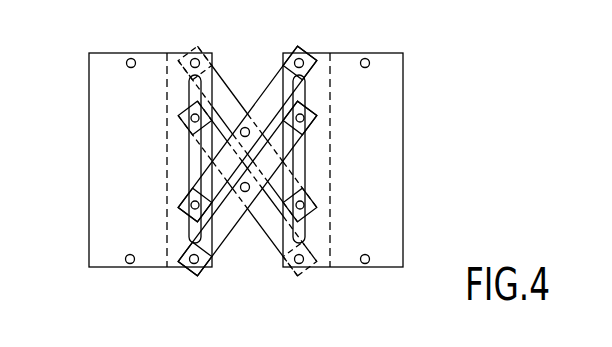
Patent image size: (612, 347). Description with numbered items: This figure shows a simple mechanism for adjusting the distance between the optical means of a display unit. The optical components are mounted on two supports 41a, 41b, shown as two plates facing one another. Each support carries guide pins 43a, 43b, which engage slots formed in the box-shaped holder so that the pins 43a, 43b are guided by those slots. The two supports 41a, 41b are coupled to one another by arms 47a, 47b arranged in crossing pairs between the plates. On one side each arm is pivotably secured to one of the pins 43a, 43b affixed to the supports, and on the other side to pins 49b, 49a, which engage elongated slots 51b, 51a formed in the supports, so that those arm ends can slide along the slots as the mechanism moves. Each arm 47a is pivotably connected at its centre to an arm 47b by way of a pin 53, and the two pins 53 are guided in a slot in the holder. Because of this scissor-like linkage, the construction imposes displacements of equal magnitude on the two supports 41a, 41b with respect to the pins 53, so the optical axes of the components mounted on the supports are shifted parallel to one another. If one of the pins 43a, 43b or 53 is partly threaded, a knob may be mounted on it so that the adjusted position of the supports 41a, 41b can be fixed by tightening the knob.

The support 41a is at (103, 181).
The support 41b is at (388, 182).
The guide pin 43a is at (190, 48).
The guide pin 43b is at (366, 56).
The arm 47a is at (221, 96).
The arm 47b is at (268, 95).
The pin 49a is at (180, 117).
The pin 49b is at (315, 117).
The slot 51a is at (195, 159).
The slot 51b is at (302, 158).
The pin 53 is at (247, 111).